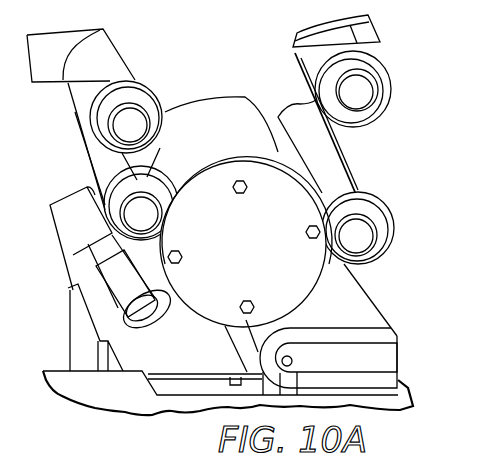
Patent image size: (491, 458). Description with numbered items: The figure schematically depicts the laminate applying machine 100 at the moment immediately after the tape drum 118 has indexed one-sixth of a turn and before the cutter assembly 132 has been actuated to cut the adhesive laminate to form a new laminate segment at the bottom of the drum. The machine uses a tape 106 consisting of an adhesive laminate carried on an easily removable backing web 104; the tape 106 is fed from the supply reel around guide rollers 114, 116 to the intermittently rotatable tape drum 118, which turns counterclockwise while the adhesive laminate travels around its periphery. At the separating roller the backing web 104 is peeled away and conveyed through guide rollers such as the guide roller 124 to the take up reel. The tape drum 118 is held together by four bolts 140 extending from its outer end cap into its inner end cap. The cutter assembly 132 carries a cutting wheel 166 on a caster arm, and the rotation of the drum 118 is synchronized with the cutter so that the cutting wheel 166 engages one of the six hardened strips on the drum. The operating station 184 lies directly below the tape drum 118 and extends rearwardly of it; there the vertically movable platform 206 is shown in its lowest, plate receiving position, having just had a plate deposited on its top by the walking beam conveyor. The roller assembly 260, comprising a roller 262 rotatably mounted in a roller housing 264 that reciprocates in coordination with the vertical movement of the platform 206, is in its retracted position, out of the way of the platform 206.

The laminate applying machine 100 is at (322, 14).
The guide roller 124 is at (120, 62).
The tape 106 is at (211, 112).
The backing web 104 is at (74, 110).
The guide roller 114 is at (394, 95).
The guide roller 116 is at (387, 228).
The bolts 140 is at (249, 192).
The tape drum 118 is at (315, 283).
The roller assembly 260 is at (400, 346).
The roller housing 264 is at (355, 372).
The roller 262 is at (262, 331).
The cutting wheel 166 is at (135, 331).
The cutter assembly 132 is at (67, 269).
The operating station 184 is at (128, 433).
The platform 206 is at (188, 386).